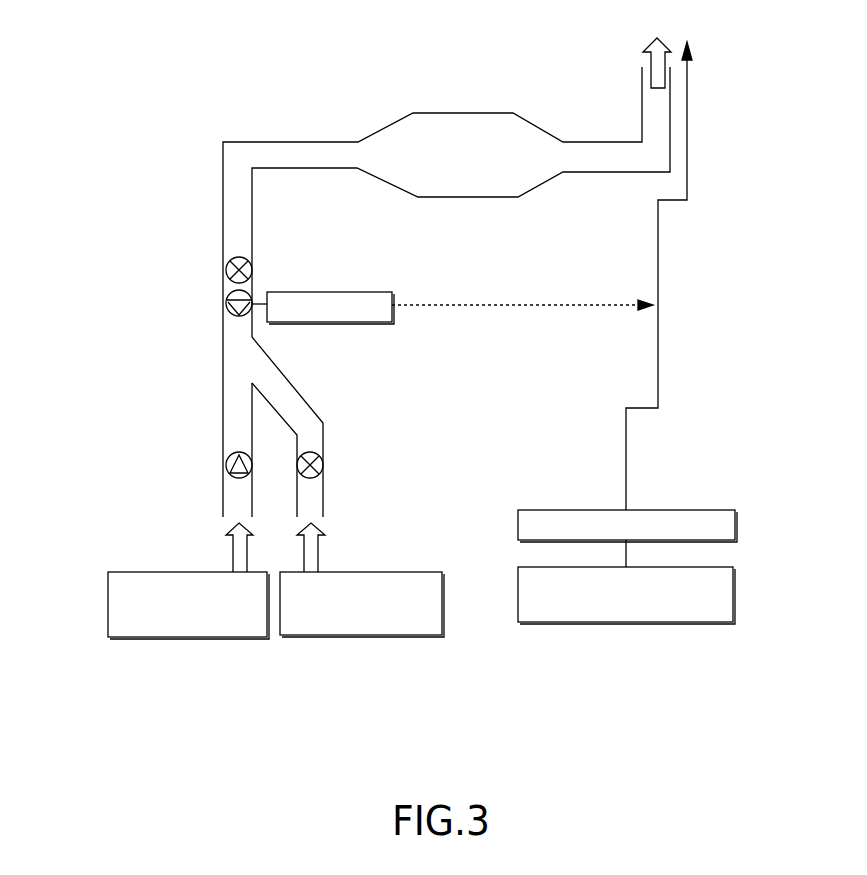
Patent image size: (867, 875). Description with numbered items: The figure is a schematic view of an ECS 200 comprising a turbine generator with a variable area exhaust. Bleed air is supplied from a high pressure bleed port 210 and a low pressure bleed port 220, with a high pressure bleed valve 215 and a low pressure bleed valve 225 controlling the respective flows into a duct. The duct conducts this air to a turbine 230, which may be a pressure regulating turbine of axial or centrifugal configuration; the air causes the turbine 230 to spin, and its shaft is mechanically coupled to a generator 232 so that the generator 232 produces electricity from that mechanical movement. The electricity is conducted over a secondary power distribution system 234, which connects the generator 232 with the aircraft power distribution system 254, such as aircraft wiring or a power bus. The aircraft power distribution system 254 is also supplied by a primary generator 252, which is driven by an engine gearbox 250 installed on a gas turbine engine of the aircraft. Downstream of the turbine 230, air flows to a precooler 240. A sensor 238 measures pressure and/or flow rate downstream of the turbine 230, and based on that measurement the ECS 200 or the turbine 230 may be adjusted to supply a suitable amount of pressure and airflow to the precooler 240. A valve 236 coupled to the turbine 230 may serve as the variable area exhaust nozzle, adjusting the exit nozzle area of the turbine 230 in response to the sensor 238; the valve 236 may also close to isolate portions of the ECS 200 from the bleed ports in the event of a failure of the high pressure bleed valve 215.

The ECS 200 is at (186, 55).
The high pressure bleed port 210 is at (442, 632).
The high pressure bleed valve 215 is at (325, 463).
The low pressure bleed port 220 is at (108, 600).
The low pressure bleed valve 225 is at (226, 462).
The turbine 230 is at (226, 303).
The generator 232 is at (395, 318).
The secondary power distribution system 234 is at (553, 303).
The valve 236 is at (252, 271).
The sensor 238 is at (237, 213).
The precooler 240 is at (520, 198).
The engine gearbox 250 is at (722, 625).
The primary generator 252 is at (737, 520).
The aircraft power distribution system 254 is at (659, 292).